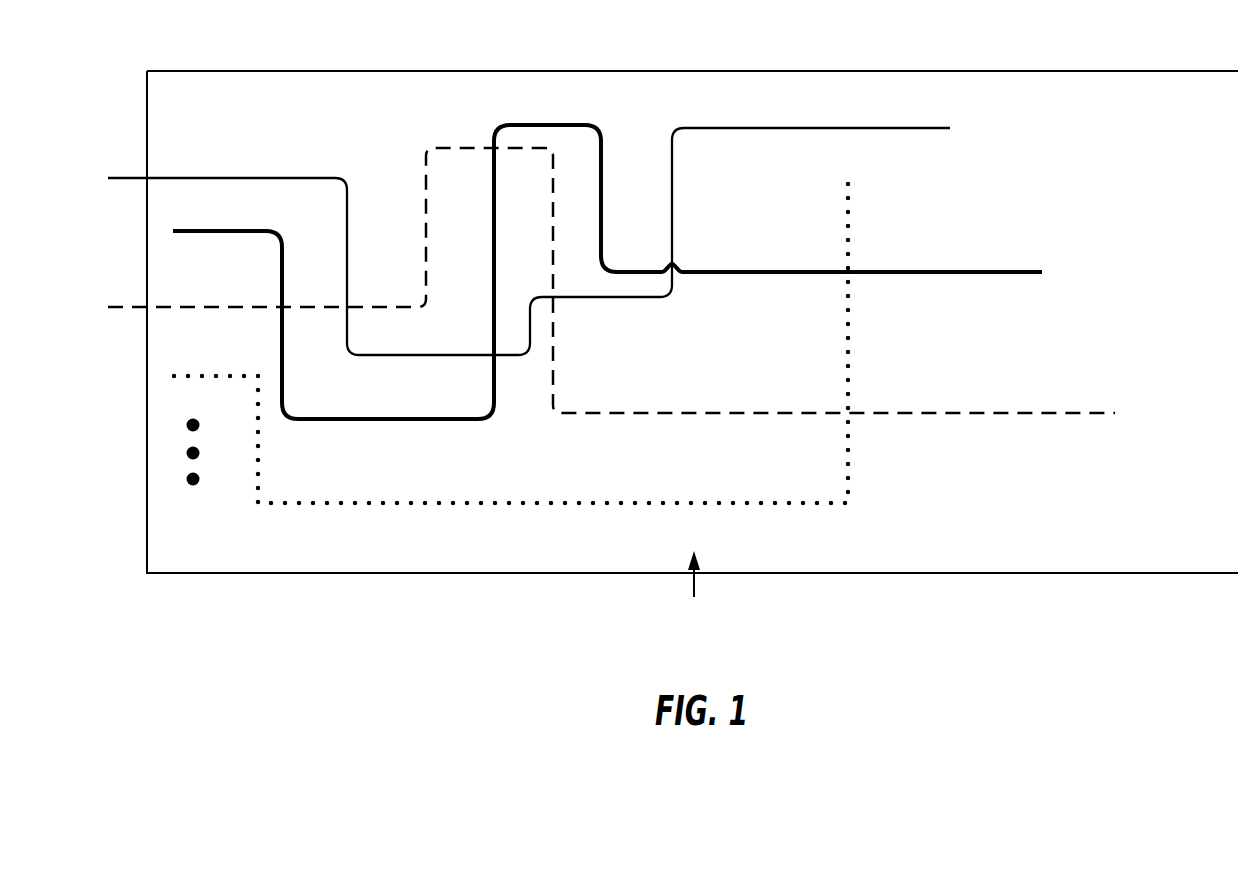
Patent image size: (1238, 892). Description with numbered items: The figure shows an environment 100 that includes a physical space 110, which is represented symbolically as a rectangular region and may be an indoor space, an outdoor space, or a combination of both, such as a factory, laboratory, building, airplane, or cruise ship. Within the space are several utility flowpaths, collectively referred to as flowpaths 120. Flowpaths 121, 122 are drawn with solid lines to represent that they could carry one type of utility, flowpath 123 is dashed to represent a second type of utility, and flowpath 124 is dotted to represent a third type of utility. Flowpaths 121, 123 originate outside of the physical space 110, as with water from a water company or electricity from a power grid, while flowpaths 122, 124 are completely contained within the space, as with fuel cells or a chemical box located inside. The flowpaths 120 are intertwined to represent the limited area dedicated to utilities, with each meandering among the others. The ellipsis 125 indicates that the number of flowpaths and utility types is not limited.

The environment 100 is at (718, 38).
The physical space 110 is at (272, 105).
The flowpaths 120 is at (696, 589).
The flowpath 121 is at (318, 178).
The flowpath 122 is at (232, 231).
The flowpath 123 is at (193, 307).
The flowpath 124 is at (258, 479).
The ellipses 125 is at (177, 455).